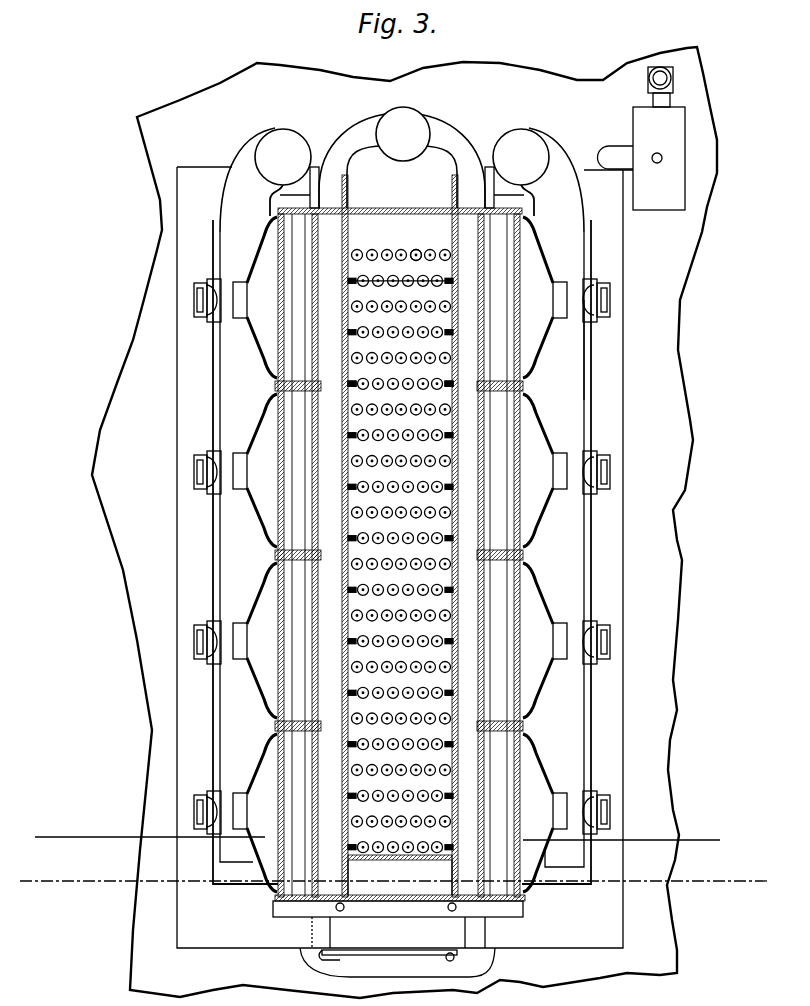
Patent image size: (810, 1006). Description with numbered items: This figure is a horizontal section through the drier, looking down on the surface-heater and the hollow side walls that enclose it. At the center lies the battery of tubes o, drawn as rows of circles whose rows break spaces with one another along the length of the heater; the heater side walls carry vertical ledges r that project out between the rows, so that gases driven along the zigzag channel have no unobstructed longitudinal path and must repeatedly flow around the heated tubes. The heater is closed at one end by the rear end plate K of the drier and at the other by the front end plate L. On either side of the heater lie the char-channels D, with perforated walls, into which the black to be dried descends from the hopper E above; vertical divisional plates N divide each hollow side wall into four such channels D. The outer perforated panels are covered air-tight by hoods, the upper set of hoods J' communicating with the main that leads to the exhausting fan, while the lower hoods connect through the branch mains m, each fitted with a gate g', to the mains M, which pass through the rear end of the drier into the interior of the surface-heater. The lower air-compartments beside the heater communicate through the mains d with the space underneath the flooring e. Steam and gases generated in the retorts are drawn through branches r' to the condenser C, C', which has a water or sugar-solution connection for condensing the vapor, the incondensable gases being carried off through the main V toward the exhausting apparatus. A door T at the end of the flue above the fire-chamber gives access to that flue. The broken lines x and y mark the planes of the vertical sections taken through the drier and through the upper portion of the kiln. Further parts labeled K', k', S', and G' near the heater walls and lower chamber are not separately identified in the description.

The flooring e is at (412, 557).
The condenser C is at (642, 158).
The main V is at (648, 87).
The main d is at (402, 157).
The main M is at (402, 180).
The hopper E is at (252, 862).
The gate g' is at (402, 543).
The branch main m is at (590, 326).
The char-channel D is at (399, 555).
The divisional plate N is at (275, 386).
The upper hood J' is at (400, 554).
The rear end plate K is at (400, 227).
The left column wall K' is at (335, 536).
The right column wall k' is at (464, 536).
The vertical ledge r is at (401, 539).
The branch r' is at (400, 563).
The tube o is at (418, 258).
The condenser C' is at (397, 441).
The bottom plate S' is at (400, 866).
The lower chamber G' is at (400, 877).
The front end plate L is at (399, 899).
The door T is at (397, 947).
The broken line x is at (395, 880).
The broken line y is at (385, 831).